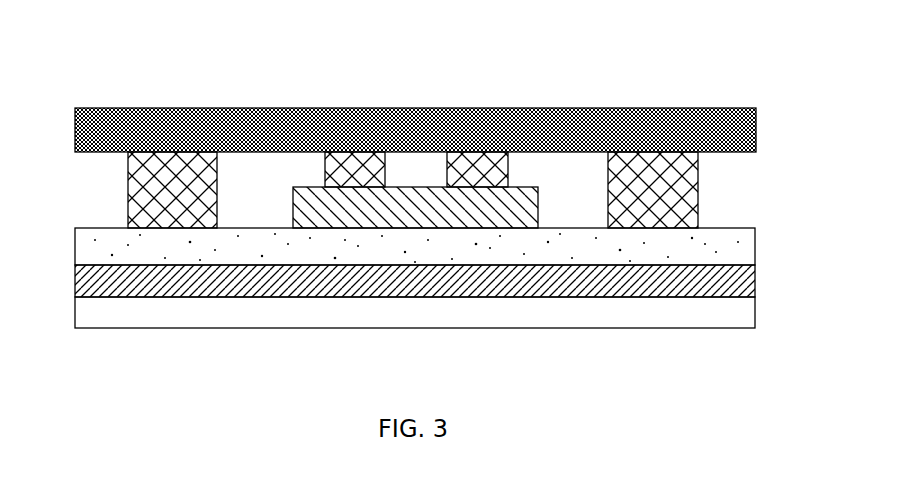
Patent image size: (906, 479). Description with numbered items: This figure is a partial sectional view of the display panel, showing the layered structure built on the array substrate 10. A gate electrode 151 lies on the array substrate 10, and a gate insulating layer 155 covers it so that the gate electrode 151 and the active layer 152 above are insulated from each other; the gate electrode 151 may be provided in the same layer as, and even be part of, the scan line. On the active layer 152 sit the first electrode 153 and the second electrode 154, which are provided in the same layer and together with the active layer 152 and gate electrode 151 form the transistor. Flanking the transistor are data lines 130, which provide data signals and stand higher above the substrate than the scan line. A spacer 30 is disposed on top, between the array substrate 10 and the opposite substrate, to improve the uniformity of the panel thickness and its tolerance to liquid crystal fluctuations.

The array substrate 10 is at (663, 302).
The spacer 30 is at (267, 108).
The data line 130 is at (184, 158).
The gate electrode 151 is at (543, 270).
The active layer 152 is at (412, 190).
The first electrode 153 is at (493, 155).
The second electrode 154 is at (350, 155).
The gate insulating layer 155 is at (407, 255).